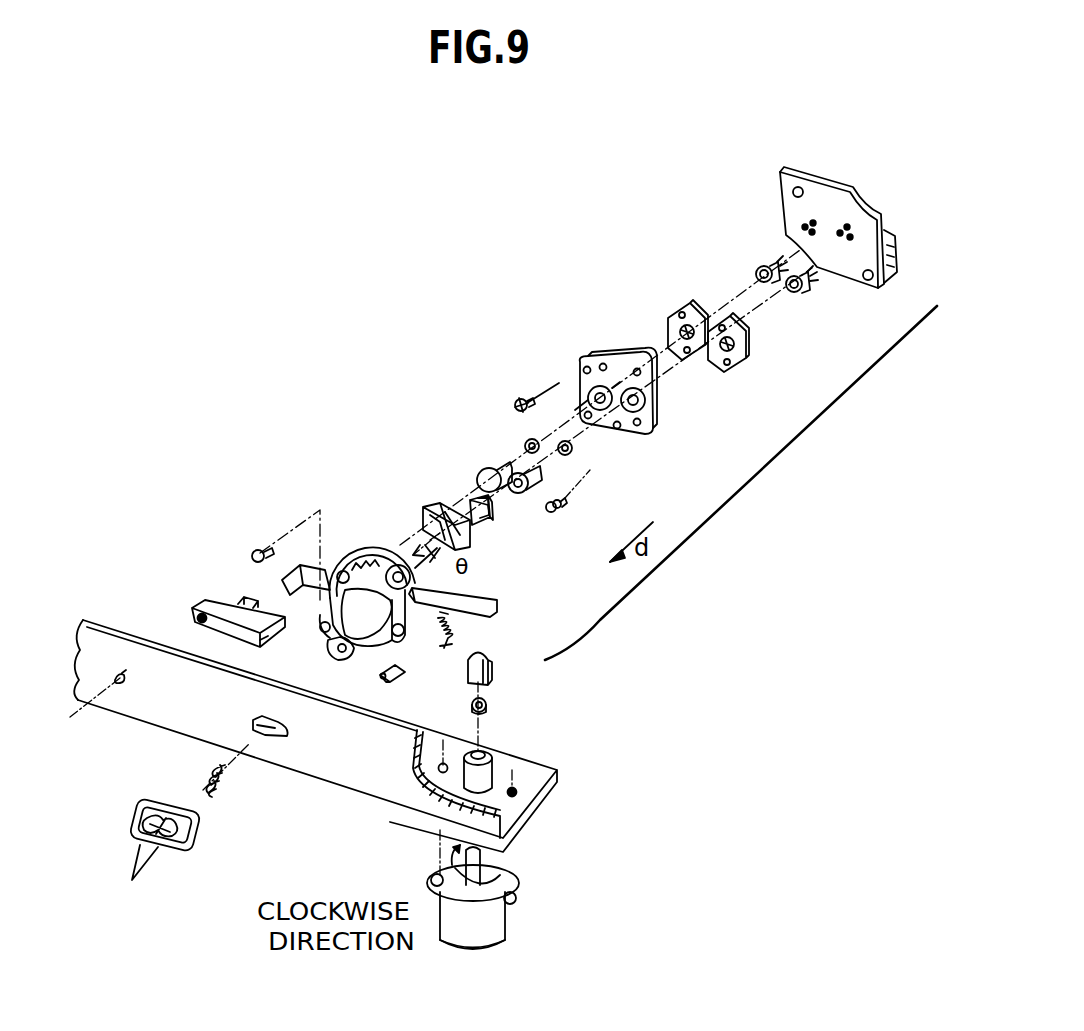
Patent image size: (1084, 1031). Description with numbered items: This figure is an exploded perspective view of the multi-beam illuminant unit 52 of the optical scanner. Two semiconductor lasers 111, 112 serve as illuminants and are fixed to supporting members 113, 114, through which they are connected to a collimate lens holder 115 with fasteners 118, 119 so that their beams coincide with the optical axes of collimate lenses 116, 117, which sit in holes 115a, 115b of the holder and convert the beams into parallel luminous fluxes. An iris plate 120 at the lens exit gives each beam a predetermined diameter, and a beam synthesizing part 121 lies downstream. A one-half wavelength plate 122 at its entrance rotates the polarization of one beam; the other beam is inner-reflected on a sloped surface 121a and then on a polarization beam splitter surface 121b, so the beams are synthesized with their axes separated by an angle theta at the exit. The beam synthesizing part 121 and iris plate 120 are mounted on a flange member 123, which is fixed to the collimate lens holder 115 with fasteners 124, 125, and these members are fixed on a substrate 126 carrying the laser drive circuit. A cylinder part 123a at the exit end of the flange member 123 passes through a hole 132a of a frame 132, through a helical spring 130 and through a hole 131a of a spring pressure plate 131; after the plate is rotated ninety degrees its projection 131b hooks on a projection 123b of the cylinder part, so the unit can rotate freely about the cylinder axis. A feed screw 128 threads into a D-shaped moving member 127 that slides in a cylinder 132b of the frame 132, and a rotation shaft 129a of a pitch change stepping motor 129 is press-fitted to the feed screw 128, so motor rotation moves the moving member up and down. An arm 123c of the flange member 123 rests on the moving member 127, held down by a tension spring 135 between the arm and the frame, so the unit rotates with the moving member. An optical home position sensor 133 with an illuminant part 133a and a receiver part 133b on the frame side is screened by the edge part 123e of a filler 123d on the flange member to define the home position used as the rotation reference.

The multi-beam illuminant unit 52 is at (505, 579).
The semiconductor laser 111 is at (800, 296).
The semiconductor laser 112 is at (760, 262).
The supporting member 113 is at (740, 362).
The supporting member 114 is at (686, 305).
The collimate lens holder 115 is at (652, 383).
The hole 115a is at (648, 408).
The hole 115b is at (592, 356).
The collimate lens 116 is at (572, 450).
The collimate lens 117 is at (527, 440).
The fastener 118 is at (519, 398).
The fastener 119 is at (568, 506).
The iris plate 120 is at (480, 470).
The beam synthesizing part 121 is at (469, 497).
The sloped surface 121a is at (425, 510).
The polarization beam splitter surface 121b is at (480, 525).
The ½ wavelength plate 122 is at (492, 512).
The flange member 123 is at (394, 593).
The cylinder part 123a is at (330, 625).
The projection 123b is at (346, 662).
The arm 123c is at (497, 606).
The filler 123d is at (362, 565).
The edge part 123e is at (280, 572).
The fastener 124 is at (260, 548).
The fastener 125 is at (390, 684).
The substrate 126 is at (848, 265).
The moving member 127 is at (490, 660).
The feed screw 128 is at (488, 704).
The pitch change stepping motor 129 is at (521, 894).
The rotation shaft 129a is at (490, 870).
The helical spring 130 is at (230, 790).
The spring pressure plate 131 is at (178, 832).
The hole 131a is at (145, 810).
The projection 131b is at (126, 880).
The frame 132 is at (399, 738).
The hole 132a is at (255, 720).
The cylinder 132b is at (493, 756).
The optical home position sensor 133 is at (221, 614).
The illuminant part 133a is at (246, 600).
The receiver part 133b is at (270, 642).
The tension spring 135 is at (442, 645).